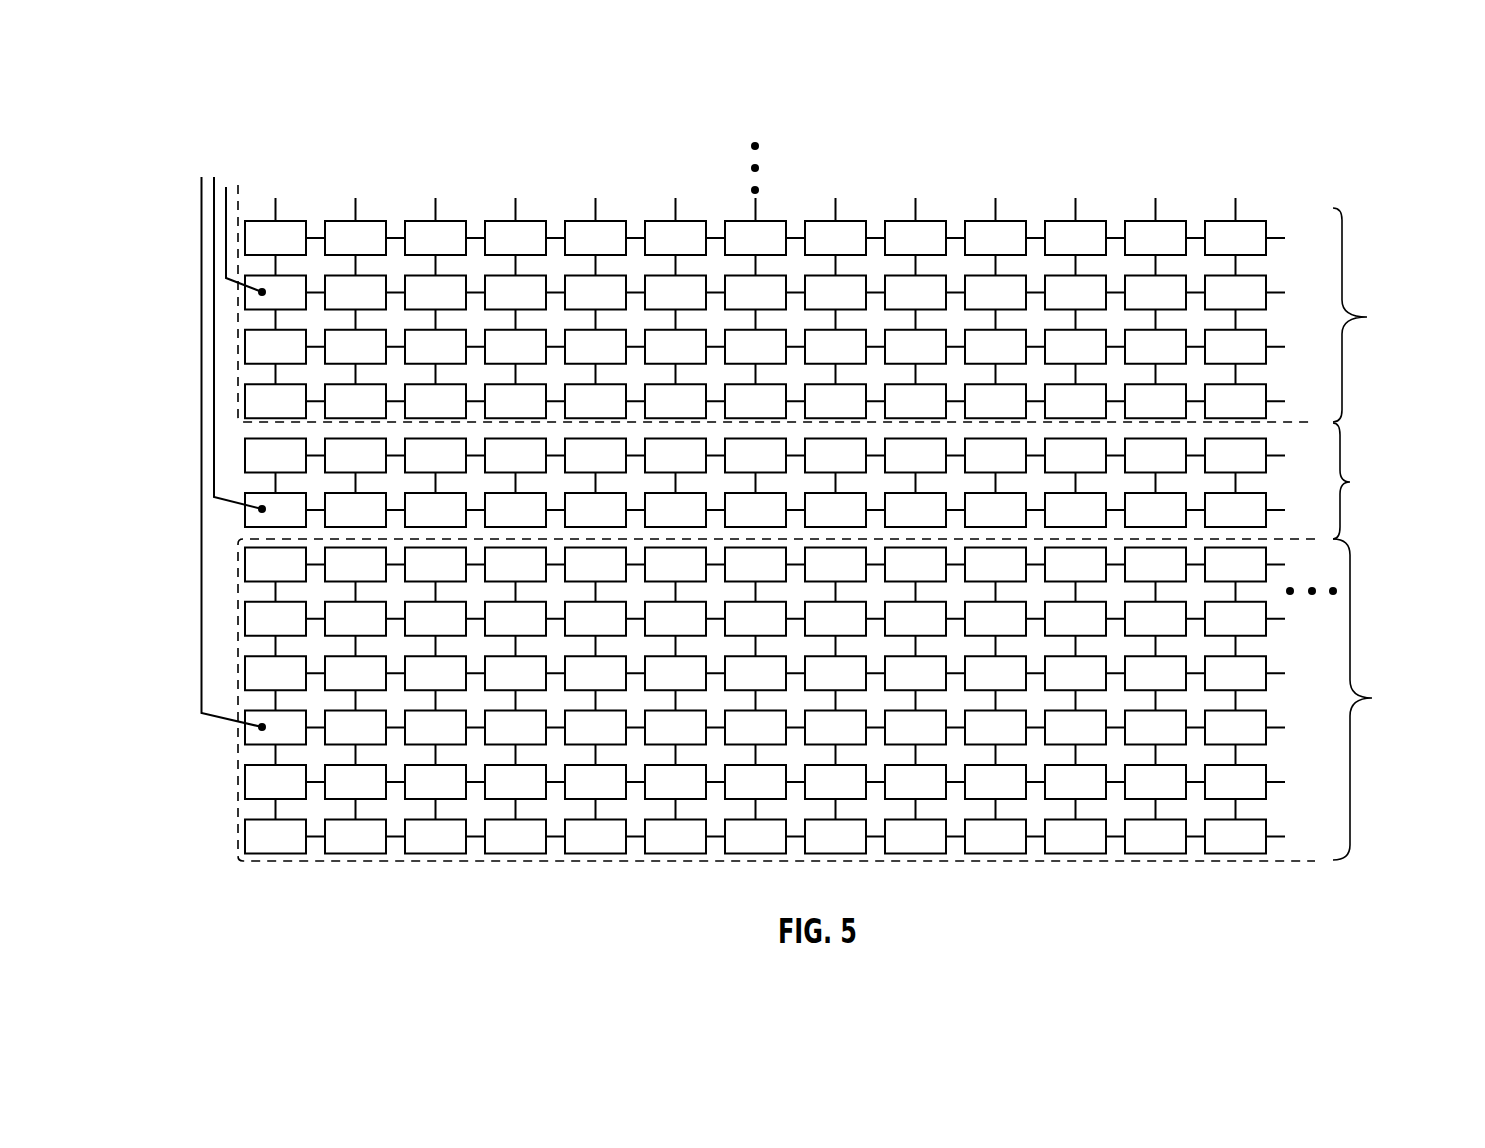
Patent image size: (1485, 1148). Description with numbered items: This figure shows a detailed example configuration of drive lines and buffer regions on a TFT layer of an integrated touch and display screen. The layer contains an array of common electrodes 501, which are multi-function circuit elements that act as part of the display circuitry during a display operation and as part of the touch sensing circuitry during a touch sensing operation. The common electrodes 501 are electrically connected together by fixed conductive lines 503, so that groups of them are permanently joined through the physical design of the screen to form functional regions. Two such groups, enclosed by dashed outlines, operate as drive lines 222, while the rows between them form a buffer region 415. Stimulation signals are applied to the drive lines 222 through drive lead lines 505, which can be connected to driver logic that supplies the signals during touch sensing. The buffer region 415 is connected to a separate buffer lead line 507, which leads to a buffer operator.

The common electrode 501 is at (1243, 237).
The conductive lines 503 is at (1188, 199).
The drive lead lines 505 is at (226, 213).
The buffer lead line 507 is at (214, 197).
The drive line 222 is at (1372, 698).
The pixel material 415 is at (1350, 482).